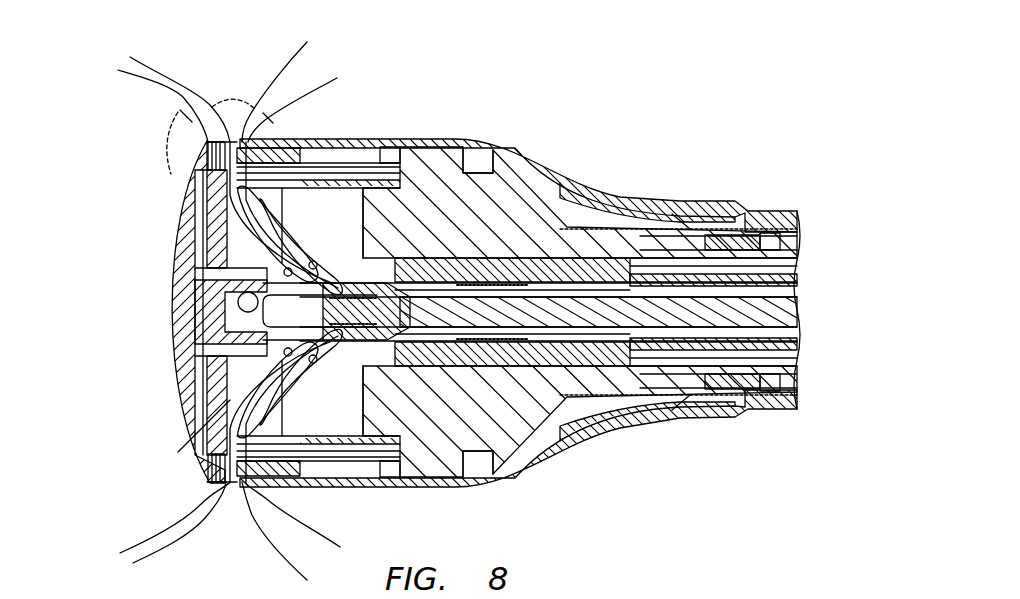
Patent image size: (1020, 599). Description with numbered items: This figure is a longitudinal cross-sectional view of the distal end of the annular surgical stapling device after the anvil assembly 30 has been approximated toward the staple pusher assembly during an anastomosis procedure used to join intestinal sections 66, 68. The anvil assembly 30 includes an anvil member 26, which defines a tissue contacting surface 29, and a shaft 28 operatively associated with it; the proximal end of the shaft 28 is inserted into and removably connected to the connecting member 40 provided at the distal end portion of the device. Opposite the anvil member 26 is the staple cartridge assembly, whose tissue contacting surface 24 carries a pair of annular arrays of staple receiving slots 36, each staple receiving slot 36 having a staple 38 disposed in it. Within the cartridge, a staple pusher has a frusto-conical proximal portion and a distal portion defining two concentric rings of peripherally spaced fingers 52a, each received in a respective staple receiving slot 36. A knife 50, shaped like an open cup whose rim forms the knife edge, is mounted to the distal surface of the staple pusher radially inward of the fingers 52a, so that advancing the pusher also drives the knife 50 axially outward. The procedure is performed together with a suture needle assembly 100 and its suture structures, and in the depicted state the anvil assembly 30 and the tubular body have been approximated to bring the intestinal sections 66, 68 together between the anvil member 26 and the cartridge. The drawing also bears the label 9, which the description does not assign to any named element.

The connector assembly 9 is at (170, 172).
The cable entry / strain relief 24 is at (232, 105).
The rear housing dome 26 is at (180, 412).
The coupling nut 28 is at (566, 396).
The seal cap 29 is at (202, 143).
The rear end 30 is at (178, 452).
The inner sleeve 36 is at (345, 148).
The retaining ring 38 is at (298, 143).
The ferrule 40 is at (743, 358).
The outer shell 50 is at (427, 187).
The ribs 52a is at (408, 142).
The second cable 66 is at (291, 78).
The first cable 68 is at (158, 78).
The contact terminals 100 is at (175, 297).